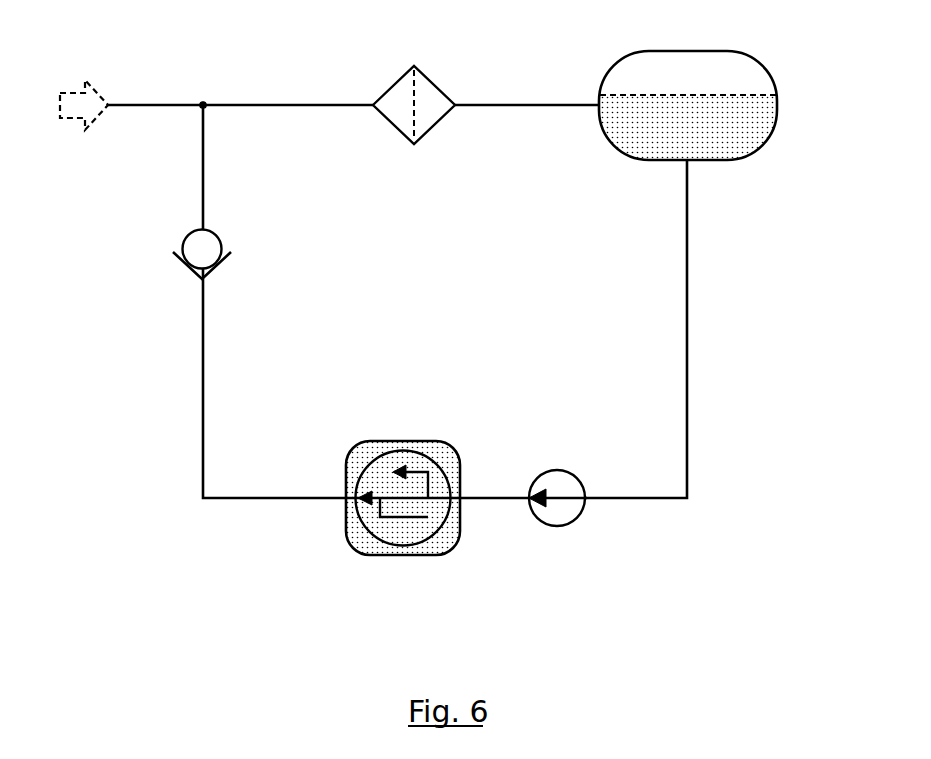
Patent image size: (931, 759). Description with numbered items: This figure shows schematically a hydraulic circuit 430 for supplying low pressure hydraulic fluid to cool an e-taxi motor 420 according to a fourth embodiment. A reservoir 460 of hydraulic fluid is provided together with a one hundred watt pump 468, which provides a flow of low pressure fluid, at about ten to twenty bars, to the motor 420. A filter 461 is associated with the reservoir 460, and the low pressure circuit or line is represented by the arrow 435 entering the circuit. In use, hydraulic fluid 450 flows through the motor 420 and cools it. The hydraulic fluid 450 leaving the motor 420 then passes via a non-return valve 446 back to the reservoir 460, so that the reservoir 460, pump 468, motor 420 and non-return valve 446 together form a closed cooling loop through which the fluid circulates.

The hydraulic circuit 430 is at (730, 300).
The low pressure circuit/line 435 is at (82, 100).
The filter 461 is at (401, 90).
The reservoir 460 is at (738, 140).
The non-return valve 446 is at (215, 245).
The hydraulic fluid 450 is at (358, 536).
The e-taxi motor 420 is at (346, 472).
The pump 468 is at (551, 470).